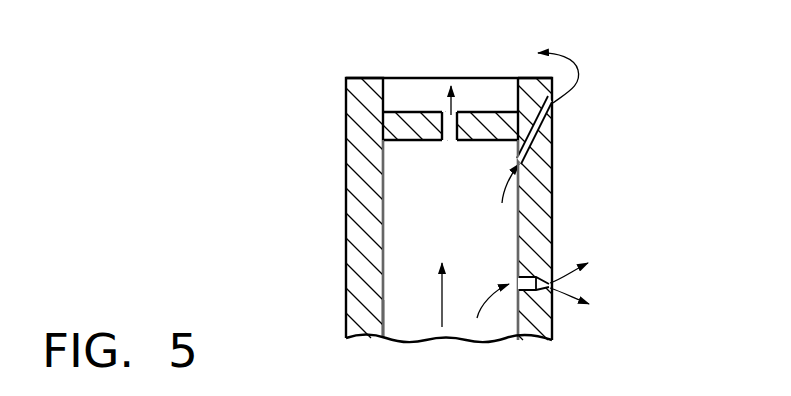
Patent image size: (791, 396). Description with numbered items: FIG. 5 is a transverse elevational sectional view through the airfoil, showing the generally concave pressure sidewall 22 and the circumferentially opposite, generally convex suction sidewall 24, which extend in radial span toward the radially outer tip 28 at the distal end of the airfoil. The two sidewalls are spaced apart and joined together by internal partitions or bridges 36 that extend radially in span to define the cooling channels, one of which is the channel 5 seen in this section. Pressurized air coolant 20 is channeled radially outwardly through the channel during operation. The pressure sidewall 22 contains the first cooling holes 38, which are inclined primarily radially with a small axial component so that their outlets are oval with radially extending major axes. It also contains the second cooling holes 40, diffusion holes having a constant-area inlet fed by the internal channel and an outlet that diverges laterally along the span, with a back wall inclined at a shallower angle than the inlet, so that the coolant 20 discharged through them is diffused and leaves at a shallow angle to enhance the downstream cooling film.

The channel 5 is at (443, 239).
The pressurized air coolant 20 is at (443, 316).
The pressure sidewall 22 is at (553, 208).
The suction sidewall 24 is at (347, 226).
The tip 28 is at (365, 78).
The internal partition 36 is at (400, 323).
The first cooling hole 38 is at (553, 124).
The second cooling hole 40 is at (553, 291).